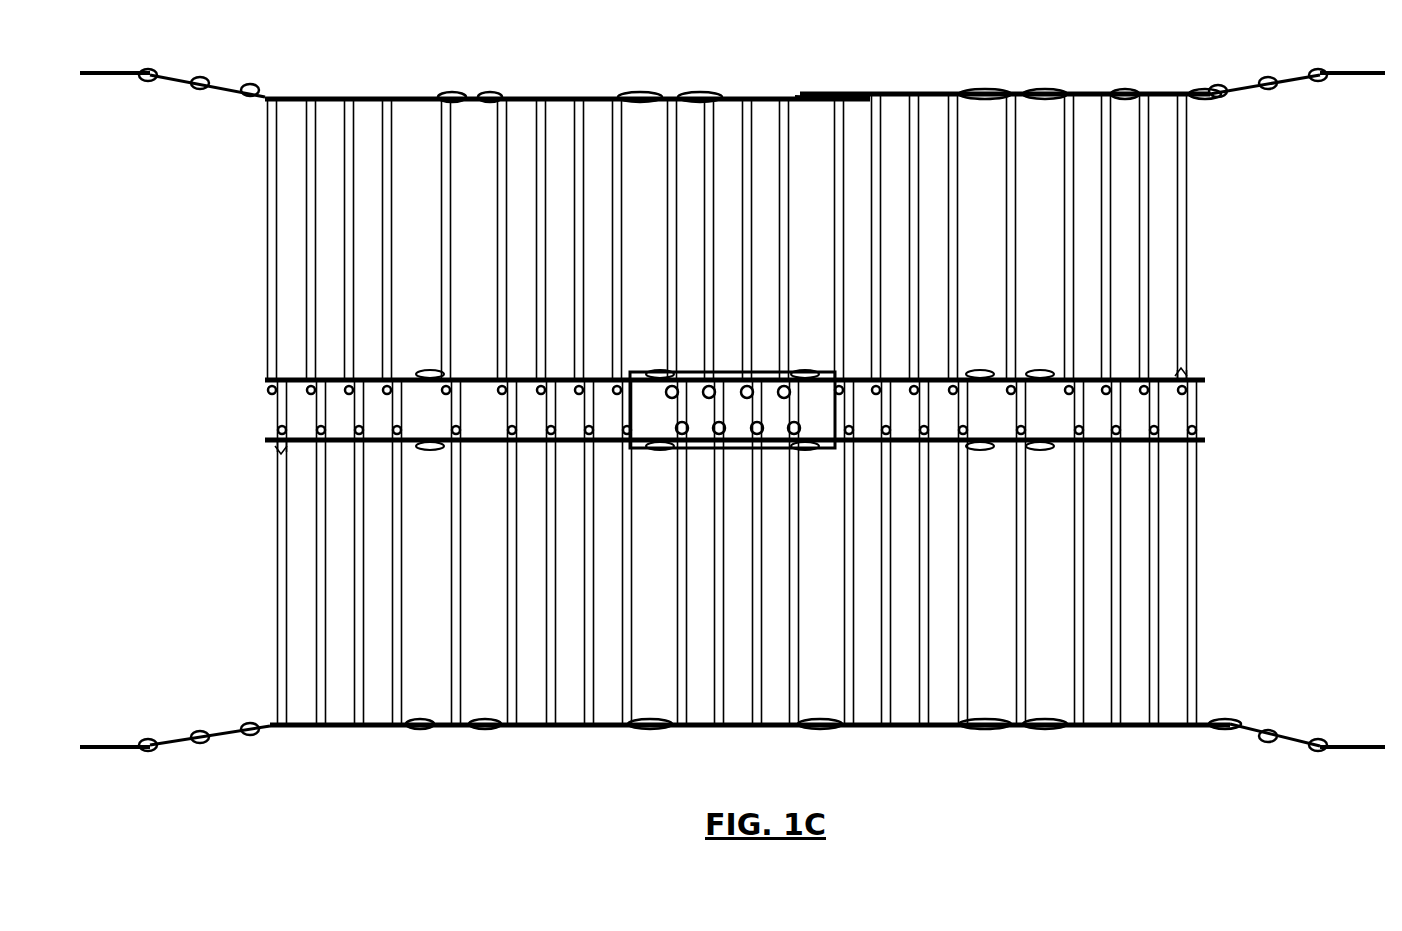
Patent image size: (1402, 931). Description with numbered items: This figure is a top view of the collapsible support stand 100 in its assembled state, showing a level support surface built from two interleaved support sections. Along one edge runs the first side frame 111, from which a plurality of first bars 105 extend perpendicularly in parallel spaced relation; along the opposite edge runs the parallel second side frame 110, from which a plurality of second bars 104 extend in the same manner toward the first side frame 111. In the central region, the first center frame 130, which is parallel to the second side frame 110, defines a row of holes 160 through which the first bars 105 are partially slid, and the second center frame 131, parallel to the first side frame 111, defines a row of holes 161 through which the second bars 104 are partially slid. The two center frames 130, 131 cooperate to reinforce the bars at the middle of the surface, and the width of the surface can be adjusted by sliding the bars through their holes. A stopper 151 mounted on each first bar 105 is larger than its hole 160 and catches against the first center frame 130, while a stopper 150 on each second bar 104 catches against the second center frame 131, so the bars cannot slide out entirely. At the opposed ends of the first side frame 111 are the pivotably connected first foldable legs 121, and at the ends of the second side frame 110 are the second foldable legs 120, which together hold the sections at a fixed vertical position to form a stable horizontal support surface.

The collapsible support stand 100 is at (990, 826).
The second bars 104 is at (1200, 505).
The first bars 105 is at (265, 220).
The second side frame 110 is at (347, 730).
The first side frame 111 is at (750, 92).
The second foldable legs 120 is at (165, 732).
The first foldable legs 121 is at (175, 60).
The first center frame 130 is at (1190, 355).
The second center frame 131 is at (270, 453).
The stopper 150 is at (1200, 415).
The stopper 151 is at (265, 395).
The holes 160 is at (265, 372).
The holes 161 is at (1205, 448).